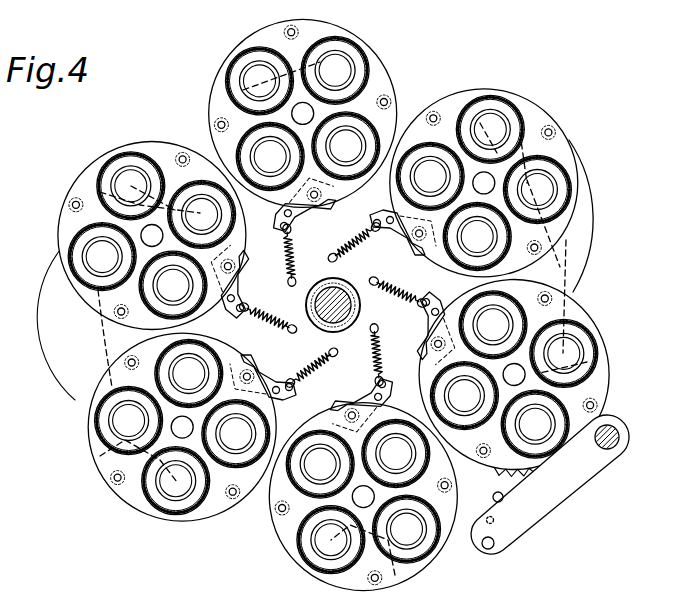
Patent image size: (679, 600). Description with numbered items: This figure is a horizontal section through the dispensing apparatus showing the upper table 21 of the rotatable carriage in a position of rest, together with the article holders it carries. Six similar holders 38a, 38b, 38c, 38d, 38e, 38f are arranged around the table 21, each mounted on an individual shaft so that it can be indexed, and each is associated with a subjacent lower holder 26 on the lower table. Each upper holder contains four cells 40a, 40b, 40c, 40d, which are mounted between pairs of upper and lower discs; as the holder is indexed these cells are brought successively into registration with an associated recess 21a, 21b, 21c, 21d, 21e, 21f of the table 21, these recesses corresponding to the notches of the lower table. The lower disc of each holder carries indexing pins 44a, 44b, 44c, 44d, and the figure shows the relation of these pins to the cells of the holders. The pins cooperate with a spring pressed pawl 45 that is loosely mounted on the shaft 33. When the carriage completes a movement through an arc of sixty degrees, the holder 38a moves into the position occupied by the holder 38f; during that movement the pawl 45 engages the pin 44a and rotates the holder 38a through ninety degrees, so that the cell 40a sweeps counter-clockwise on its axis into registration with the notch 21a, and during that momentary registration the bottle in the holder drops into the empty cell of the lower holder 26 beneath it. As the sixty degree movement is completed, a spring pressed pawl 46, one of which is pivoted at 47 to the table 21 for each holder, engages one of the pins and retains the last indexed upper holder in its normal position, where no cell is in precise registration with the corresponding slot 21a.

The upper table 21 is at (110, 333).
The recess of the upper table 21a is at (587, 362).
The recess of the upper table 21b is at (527, 123).
The recess of the upper table 21c is at (336, 36).
The recess of the upper table 21d is at (100, 192).
The recess of the upper table 21e is at (100, 456).
The recess of the upper table 21f is at (395, 575).
The lower holder 26 is at (581, 152).
The shaft 33 is at (620, 437).
The holder 38a is at (529, 395).
The holder 38b is at (538, 118).
The holder 38c is at (268, 30).
The holder 38d is at (68, 218).
The holder 38e is at (128, 500).
The holder 38f is at (420, 562).
The cell 40a is at (540, 428).
The cell 40b is at (431, 396).
The cell 40c is at (497, 290).
The cell 40d is at (587, 318).
The indexing pin 44a is at (598, 405).
The indexing pin 44b is at (478, 456).
The indexing pin 44c is at (432, 342).
The indexing pin 44d is at (551, 297).
The spring pressed pawl 45 is at (547, 520).
The spring pressed pawl 46 is at (239, 298).
The pivot 47 is at (243, 299).